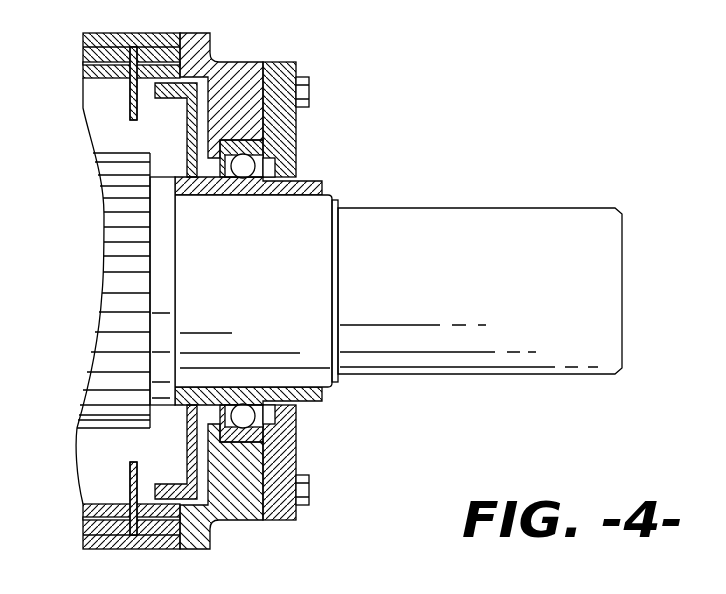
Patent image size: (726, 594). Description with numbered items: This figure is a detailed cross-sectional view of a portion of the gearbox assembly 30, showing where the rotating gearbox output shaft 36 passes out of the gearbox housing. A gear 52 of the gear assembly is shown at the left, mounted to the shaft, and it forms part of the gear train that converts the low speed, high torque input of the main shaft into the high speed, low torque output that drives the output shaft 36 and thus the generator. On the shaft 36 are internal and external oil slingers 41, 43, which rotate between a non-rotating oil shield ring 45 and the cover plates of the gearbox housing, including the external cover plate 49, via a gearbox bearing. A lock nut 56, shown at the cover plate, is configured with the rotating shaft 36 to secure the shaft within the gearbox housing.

The gearbox assembly 30 is at (479, 148).
The gearbox output shaft 36 is at (510, 377).
The internal oil slinger 41 is at (287, 196).
The external oil slinger 43 is at (185, 196).
The oil shield ring 45 is at (188, 153).
The external cover plate 49 is at (297, 140).
The gear 52 is at (120, 153).
The lock nut 56 is at (309, 88).